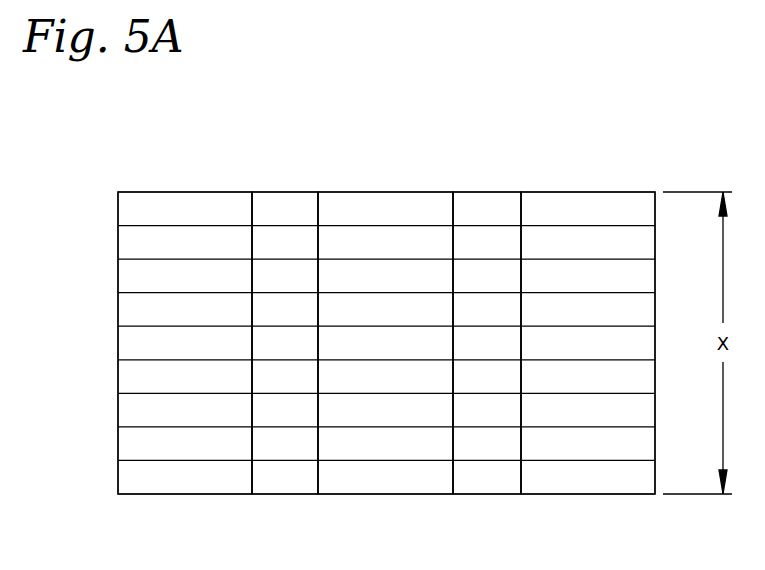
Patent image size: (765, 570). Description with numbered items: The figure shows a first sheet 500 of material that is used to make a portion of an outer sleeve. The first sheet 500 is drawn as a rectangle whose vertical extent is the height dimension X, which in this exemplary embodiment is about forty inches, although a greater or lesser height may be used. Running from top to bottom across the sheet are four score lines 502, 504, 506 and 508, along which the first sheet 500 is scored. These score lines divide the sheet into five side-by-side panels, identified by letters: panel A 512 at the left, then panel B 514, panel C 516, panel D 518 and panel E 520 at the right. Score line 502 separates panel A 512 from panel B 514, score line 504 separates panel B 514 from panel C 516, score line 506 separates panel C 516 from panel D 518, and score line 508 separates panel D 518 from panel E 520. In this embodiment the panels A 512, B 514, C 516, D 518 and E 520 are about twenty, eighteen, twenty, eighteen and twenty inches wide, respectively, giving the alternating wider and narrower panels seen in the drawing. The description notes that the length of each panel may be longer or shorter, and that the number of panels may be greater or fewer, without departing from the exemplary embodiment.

The first sheet 500 is at (135, 165).
The score line 502 is at (254, 205).
The score line 504 is at (322, 205).
The score line 506 is at (456, 205).
The score line 508 is at (524, 205).
The panel A 512 is at (177, 480).
The panel B 514 is at (277, 480).
The panel C 516 is at (378, 480).
The panel D 518 is at (478, 480).
The panel E 520 is at (579, 480).